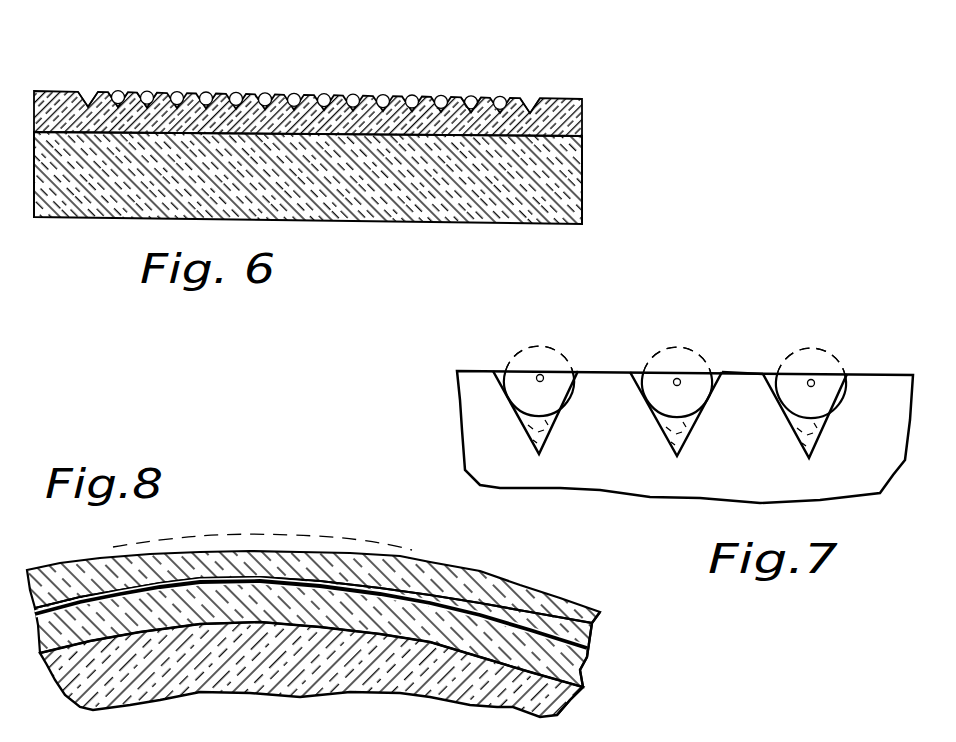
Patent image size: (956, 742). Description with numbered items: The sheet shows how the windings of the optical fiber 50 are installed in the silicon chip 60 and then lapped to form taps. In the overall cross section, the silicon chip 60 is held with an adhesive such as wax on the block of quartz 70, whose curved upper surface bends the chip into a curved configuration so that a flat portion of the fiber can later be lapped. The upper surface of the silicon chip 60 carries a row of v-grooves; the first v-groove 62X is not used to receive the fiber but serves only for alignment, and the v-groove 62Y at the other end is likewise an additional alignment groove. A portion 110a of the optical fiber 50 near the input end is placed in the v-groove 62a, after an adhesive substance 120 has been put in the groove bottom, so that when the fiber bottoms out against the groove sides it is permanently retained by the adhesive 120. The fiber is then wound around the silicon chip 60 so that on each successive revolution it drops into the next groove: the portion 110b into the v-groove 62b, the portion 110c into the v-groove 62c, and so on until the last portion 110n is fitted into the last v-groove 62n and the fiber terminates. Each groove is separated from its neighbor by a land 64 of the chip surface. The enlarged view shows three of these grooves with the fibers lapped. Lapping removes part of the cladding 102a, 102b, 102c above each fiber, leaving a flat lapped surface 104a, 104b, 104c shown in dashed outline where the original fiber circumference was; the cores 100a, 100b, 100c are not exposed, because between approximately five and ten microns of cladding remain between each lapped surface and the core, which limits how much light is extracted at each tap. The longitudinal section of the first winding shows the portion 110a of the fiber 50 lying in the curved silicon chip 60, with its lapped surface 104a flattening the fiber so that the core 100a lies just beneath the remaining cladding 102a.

In FIG. 8, the optical fiber 50 is at (597, 625).
In FIG. 6, the silicon chip 60 is at (577, 117).
In FIG. 7, the silicon chip 60 is at (473, 420).
In FIG. 8, the silicon chip 60 is at (340, 676).
In FIG. 6, the block of quartz 70 is at (563, 197).
In FIG. 6, the v-groove 62a is at (112, 88).
In FIG. 7, the v-groove 62a is at (528, 427).
In FIG. 6, the v-groove 62b is at (152, 92).
In FIG. 7, the v-groove 62b is at (687, 445).
In FIG. 7, the v-groove 62c is at (814, 441).
In FIG. 6, the v-groove 62n is at (476, 113).
In FIG. 6, the first v-groove 62X is at (88, 100).
In FIG. 6, the v-groove 62Y is at (531, 103).
In FIG. 7, the land between grooves 64 is at (743, 372).
In FIG. 7, the core 100a is at (536, 381).
In FIG. 8, the core 100a is at (590, 647).
In FIG. 7, the core 100b is at (677, 378).
In FIG. 7, the core 100c is at (814, 383).
In FIG. 7, the cladding 102a is at (527, 390).
In FIG. 8, the cladding 102a is at (520, 590).
In FIG. 7, the cladding 102b is at (663, 400).
In FIG. 7, the cladding 102c is at (828, 398).
In FIG. 7, the lapped surface 104a is at (547, 370).
In FIG. 8, the lapped surface 104a is at (288, 548).
In FIG. 7, the lapped surface 104b is at (647, 366).
In FIG. 7, the lapped surface 104c is at (803, 373).
In FIG. 6, the portion of optical fiber 110a is at (124, 90).
In FIG. 7, the portion of optical fiber 110a is at (513, 350).
In FIG. 8, the portion of optical fiber 110a is at (440, 560).
In FIG. 6, the portion of optical fiber 110b is at (156, 106).
In FIG. 7, the portion of optical fiber 110b is at (700, 348).
In FIG. 7, the portion of optical fiber 110c is at (802, 348).
In FIG. 6, the portion of optical fiber 110n is at (501, 97).
In FIG. 7, the adhesive substance 120 is at (553, 423).